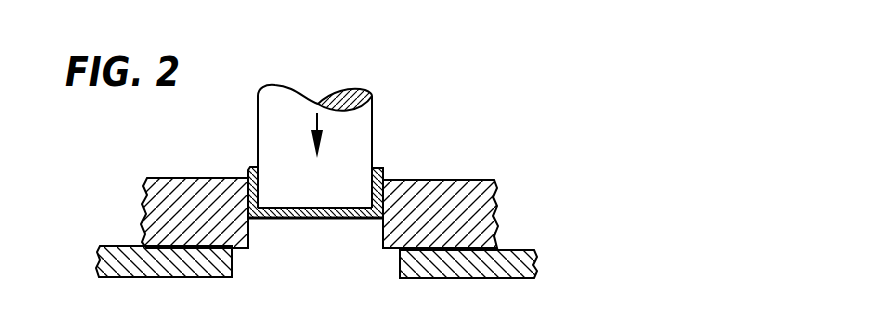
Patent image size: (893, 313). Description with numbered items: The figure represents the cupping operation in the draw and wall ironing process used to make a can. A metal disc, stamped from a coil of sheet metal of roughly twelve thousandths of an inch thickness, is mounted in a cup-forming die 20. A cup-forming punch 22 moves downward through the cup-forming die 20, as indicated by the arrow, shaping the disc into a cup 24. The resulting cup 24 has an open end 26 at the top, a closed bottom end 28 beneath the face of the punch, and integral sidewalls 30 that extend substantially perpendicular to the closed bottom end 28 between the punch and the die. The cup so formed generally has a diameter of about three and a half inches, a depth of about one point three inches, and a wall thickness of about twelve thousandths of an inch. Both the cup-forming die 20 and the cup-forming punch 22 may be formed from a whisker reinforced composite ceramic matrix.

The cup-forming die 20 is at (460, 163).
The cup-forming punch 22 is at (372, 108).
The cup 24 is at (298, 203).
The open end 26 is at (240, 148).
The closed bottom end 28 is at (275, 218).
The integral sidewalls 30 is at (383, 167).